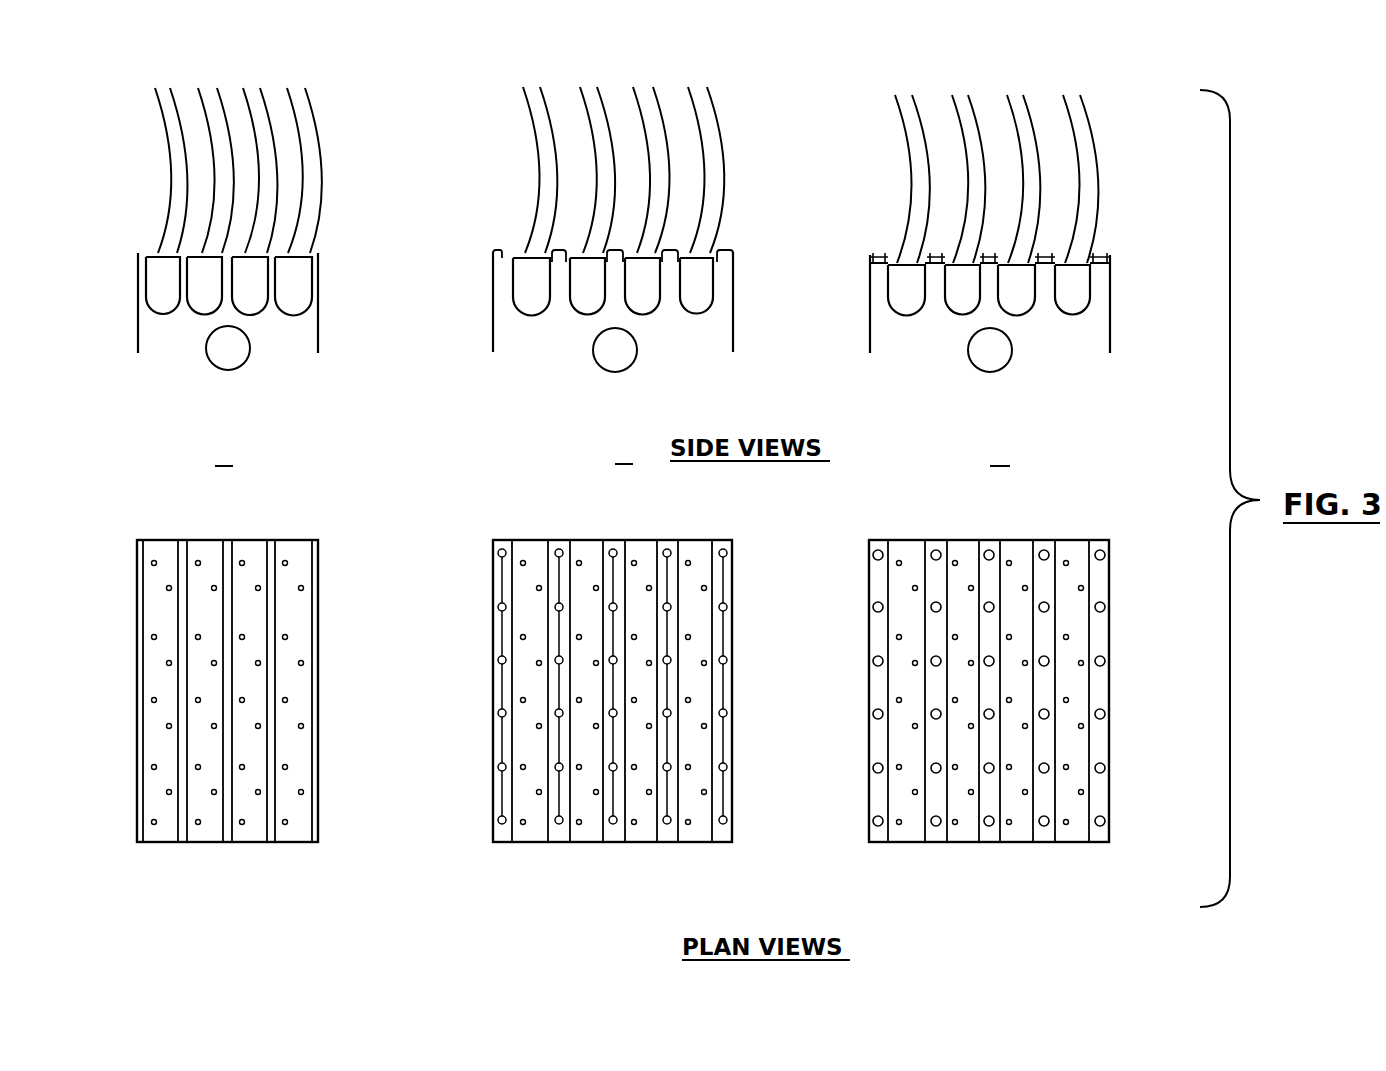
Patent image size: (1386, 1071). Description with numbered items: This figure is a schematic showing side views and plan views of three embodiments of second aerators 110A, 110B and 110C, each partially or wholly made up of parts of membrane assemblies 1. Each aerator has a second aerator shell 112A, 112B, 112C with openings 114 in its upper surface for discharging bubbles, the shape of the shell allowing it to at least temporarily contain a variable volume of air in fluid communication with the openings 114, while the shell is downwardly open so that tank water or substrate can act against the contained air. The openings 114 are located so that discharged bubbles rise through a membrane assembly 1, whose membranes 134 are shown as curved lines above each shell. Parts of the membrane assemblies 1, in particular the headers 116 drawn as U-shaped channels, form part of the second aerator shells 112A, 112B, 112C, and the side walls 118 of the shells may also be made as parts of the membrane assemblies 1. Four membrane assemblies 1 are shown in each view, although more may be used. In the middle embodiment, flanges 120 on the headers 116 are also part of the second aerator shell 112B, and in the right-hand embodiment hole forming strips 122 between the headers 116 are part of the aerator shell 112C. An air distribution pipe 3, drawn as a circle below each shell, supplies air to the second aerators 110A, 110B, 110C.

The membrane assembly 1 is at (327, 133).
The air distribution pipe 3 is at (245, 363).
The second aerator 110A is at (205, 407).
The second aerator 110B is at (605, 407).
The second aerator 110C is at (982, 405).
The second aerator shell 112A is at (162, 367).
The second aerator shell 112B is at (525, 333).
The second aerator shell 112C is at (902, 333).
The opening 114 is at (142, 250).
The header 116 is at (163, 313).
The side wall 118 is at (318, 295).
The flange 120 is at (678, 250).
The hole forming strip 122 is at (990, 257).
The membrane 134 is at (165, 137).